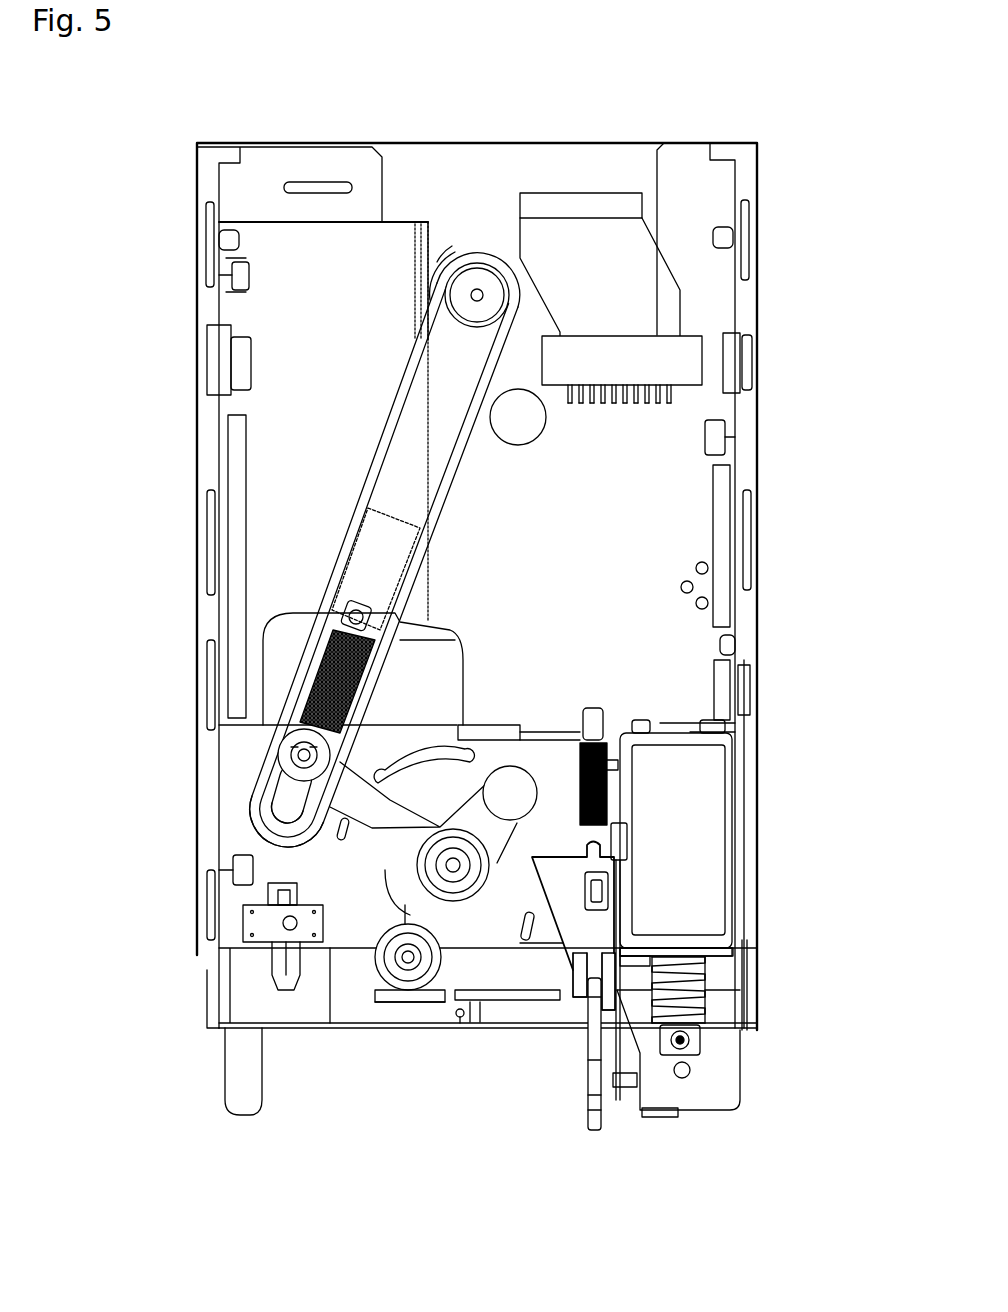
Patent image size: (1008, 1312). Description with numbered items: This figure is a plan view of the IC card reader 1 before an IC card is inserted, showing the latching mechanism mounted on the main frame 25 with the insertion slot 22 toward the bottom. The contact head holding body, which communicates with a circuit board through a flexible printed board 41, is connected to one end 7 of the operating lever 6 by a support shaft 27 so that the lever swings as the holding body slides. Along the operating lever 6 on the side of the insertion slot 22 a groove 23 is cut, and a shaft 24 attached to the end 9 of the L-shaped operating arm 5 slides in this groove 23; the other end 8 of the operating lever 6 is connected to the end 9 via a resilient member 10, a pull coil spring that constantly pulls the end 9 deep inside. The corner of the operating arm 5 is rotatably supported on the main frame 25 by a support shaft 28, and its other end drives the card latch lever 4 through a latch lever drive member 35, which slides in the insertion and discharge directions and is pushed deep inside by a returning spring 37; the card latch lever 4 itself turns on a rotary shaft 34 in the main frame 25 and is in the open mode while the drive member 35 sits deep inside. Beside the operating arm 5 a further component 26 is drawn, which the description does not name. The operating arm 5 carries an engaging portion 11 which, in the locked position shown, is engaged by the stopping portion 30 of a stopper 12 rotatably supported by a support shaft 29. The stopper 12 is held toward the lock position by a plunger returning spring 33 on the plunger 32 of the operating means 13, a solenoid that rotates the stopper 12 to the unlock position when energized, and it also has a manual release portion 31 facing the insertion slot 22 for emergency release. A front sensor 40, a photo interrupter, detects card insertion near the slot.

The IC card reader 1 is at (172, 240).
The card latch lever 4 is at (597, 1118).
The operating arm 5 is at (335, 950).
The operating lever 6 is at (398, 458).
The end of the operating lever 7 is at (479, 262).
The other end of the operating lever 8 is at (268, 818).
The end of the operating arm 9 is at (287, 788).
The resilient member 10 is at (327, 658).
The engaging portion 11 is at (363, 818).
The stopper 12 is at (482, 985).
The operating means 13 is at (712, 848).
The insertion slot 22 is at (424, 1112).
The groove 23 is at (262, 828).
The shaft 24 is at (300, 755).
The main frame 25 is at (690, 507).
The shaft 26 is at (512, 775).
The support shaft 27 is at (477, 290).
The support shaft 28 is at (483, 985).
The support shaft 29 is at (408, 960).
The stopping portion 30 is at (372, 940).
The manual release portion 31 is at (658, 1118).
The plunger 32 is at (700, 1007).
The plunger returning spring 33 is at (722, 970).
The rotary shaft 34 is at (575, 1000).
The latch lever drive member 35 is at (565, 943).
The returning spring 37 is at (610, 800).
The front sensor 40 is at (250, 925).
The flexible printed board 41 is at (670, 298).